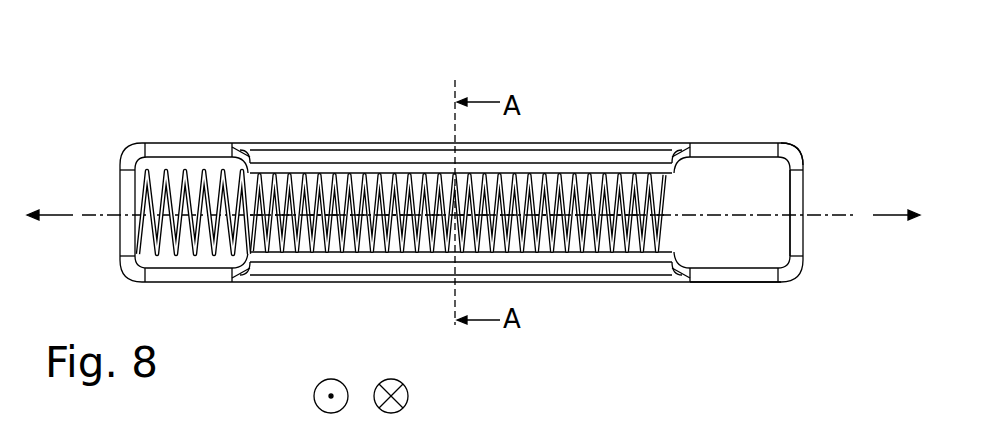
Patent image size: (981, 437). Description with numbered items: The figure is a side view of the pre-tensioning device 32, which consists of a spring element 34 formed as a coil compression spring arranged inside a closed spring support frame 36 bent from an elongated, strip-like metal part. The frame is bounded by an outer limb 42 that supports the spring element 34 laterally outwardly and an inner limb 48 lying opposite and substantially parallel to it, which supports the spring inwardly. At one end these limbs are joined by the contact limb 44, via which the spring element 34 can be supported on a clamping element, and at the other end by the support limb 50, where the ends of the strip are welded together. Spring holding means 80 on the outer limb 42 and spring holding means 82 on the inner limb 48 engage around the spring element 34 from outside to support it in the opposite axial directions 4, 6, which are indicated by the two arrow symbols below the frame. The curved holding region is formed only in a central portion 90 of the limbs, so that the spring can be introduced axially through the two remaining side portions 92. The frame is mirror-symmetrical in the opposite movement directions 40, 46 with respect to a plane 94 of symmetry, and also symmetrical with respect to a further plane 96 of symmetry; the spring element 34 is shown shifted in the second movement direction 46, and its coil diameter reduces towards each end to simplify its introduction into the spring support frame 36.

The axial direction 4 is at (314, 396).
The axial direction 6 is at (408, 394).
The pre-tensioning device 32 is at (461, 212).
The spring element 34 is at (353, 185).
The spring support frame 36 is at (793, 147).
The first movement direction 40 is at (897, 214).
The outer limb 42 is at (735, 143).
The contact limb 44 is at (123, 190).
The second movement direction 46 is at (55, 217).
The inner limb 48 is at (738, 283).
The support limb 50 is at (806, 180).
The spring holding means 80 is at (628, 150).
The spring holding means 82 is at (552, 268).
The central portion 90 is at (250, 380).
The side portions 92 is at (121, 139).
The plane of symmetry 94 is at (455, 295).
The further plane of symmetry 96 is at (830, 218).